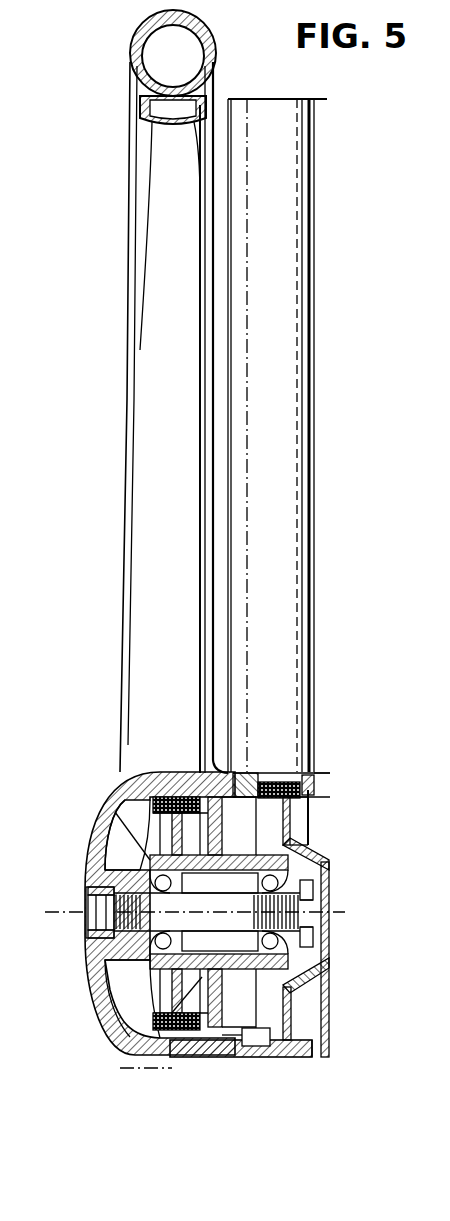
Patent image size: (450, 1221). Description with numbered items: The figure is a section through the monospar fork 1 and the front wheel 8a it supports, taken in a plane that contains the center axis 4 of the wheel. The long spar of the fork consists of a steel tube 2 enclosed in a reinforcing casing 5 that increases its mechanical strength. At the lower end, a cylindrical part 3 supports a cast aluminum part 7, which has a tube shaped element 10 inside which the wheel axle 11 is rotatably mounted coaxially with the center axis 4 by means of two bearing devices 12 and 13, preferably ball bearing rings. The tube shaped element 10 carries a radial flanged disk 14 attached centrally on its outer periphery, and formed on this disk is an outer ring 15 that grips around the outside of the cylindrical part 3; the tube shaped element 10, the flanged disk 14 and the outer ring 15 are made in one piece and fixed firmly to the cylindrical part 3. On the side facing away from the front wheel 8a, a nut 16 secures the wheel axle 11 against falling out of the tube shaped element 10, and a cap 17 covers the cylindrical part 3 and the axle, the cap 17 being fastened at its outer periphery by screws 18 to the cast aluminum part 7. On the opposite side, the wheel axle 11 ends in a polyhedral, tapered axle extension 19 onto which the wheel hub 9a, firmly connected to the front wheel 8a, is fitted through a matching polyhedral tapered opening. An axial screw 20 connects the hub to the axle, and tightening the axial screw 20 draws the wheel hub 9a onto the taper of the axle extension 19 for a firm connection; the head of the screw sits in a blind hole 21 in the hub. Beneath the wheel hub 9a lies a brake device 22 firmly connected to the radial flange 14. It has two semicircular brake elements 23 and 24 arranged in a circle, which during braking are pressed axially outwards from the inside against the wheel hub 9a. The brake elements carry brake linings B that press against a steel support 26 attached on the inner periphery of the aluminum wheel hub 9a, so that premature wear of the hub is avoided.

The monospar fork 1 is at (324, 167).
The tube 2 is at (292, 630).
The cylindrical part 3 is at (297, 1035).
The center axis 4 is at (50, 910).
The reinforcing casing 5 is at (303, 694).
The cast aluminum part 7 is at (268, 1050).
The front wheel 8a is at (132, 134).
The wheel hub 9a is at (112, 800).
The tube shaped element 10 is at (307, 840).
The wheel axle 11 is at (314, 936).
The bearing device 12 is at (108, 840).
The bearing device 13 is at (328, 858).
The radial flanged disk 14 is at (214, 831).
The outer ring 15 is at (272, 772).
The nut 16 is at (306, 885).
The cap 17 is at (328, 962).
The screws 18 is at (314, 784).
The axle extension 19 is at (112, 966).
The axial screw 20 is at (88, 903).
The blind hole 21 is at (88, 950).
The brake device 22 is at (164, 773).
The brake element 23 is at (187, 777).
The brake element 24 is at (170, 1000).
The steel support 26 is at (196, 1047).
The brake linings B is at (177, 1060).